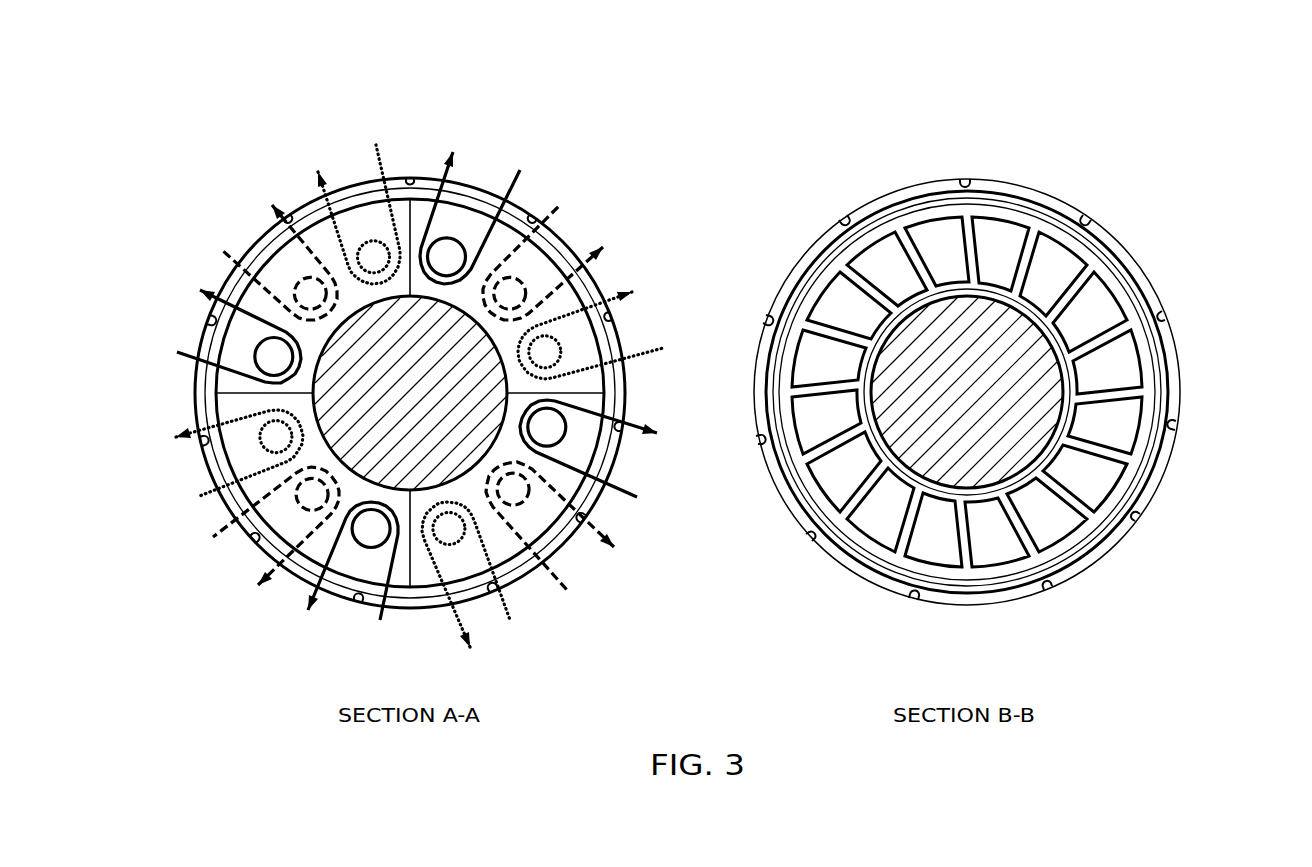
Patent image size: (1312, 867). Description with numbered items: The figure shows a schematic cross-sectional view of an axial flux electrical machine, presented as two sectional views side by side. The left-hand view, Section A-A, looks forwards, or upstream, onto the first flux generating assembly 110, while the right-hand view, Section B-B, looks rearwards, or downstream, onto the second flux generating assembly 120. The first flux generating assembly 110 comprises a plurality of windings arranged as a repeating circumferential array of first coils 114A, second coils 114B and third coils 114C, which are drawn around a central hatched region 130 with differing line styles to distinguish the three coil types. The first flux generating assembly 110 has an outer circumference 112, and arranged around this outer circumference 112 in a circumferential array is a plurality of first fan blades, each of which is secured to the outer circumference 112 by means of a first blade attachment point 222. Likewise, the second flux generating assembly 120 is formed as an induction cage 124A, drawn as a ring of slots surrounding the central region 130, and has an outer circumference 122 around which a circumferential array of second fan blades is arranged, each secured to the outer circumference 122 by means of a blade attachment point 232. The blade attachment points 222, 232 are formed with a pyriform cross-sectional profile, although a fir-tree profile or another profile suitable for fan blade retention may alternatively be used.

The first flux generating assembly 110 is at (182, 527).
The outer circumference 112 is at (594, 525).
The first coils 114A is at (447, 257).
The second coils 114B is at (512, 292).
The third coils 114C is at (375, 257).
The second flux generating assembly 120 is at (1182, 509).
The outer circumference 122 is at (1181, 362).
The induction cage 124A is at (894, 578).
The central shaft 130 is at (470, 480).
The first blade attachment point 222 is at (411, 176).
The first blade attachment point 232 is at (1088, 217).